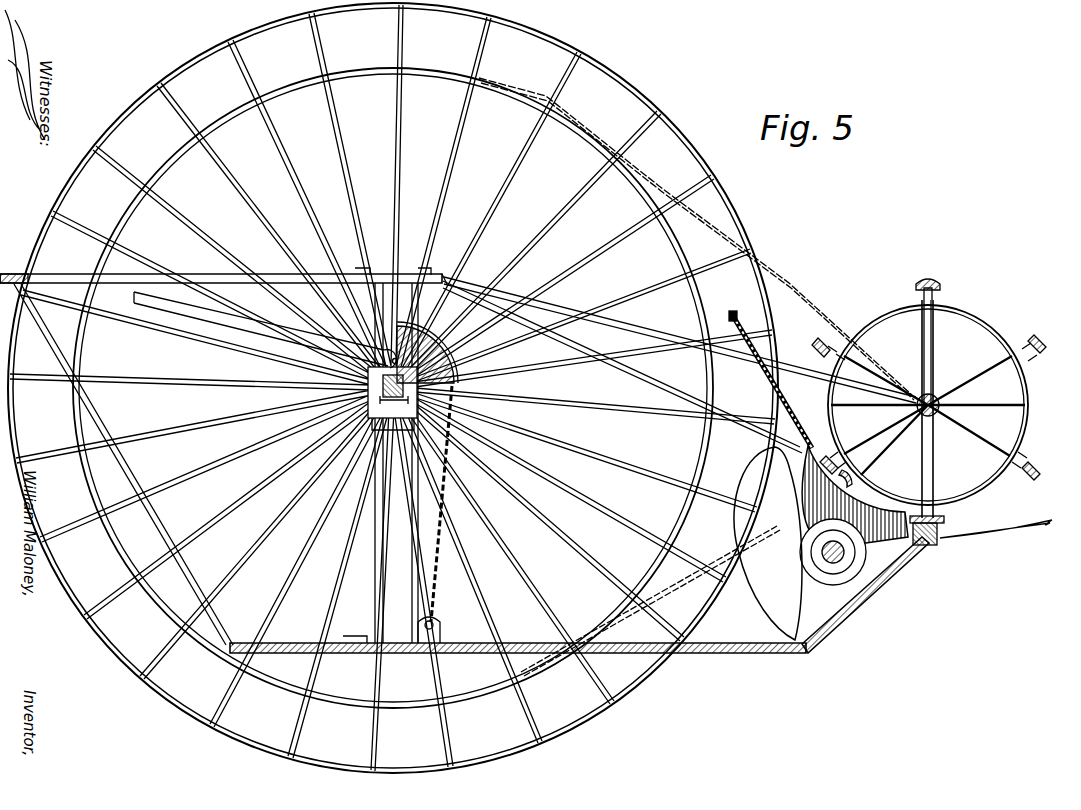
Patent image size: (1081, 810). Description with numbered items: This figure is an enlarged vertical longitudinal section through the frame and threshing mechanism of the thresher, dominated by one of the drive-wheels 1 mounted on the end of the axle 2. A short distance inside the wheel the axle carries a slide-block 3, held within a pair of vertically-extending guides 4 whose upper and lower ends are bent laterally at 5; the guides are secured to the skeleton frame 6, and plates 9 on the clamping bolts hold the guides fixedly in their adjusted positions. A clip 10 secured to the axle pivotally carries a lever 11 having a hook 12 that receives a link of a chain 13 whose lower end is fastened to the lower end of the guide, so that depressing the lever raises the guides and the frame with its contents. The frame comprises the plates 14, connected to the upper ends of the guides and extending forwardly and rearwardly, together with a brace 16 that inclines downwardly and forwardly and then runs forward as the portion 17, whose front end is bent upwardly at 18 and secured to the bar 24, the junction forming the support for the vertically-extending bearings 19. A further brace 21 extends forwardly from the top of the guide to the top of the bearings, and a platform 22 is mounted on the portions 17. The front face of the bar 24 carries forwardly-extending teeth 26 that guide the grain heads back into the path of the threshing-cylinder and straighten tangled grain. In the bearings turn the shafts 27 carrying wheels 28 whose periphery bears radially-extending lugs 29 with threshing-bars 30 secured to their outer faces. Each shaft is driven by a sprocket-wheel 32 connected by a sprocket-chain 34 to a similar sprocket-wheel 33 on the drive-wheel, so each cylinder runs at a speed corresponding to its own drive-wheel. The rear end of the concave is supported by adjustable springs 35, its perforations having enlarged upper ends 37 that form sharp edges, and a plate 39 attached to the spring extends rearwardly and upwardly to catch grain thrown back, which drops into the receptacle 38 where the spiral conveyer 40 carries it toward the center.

The drive-wheels 1 is at (612, 68).
The axle 2 is at (470, 384).
The slide-block 3 is at (360, 440).
The guides 4 is at (374, 522).
The laterally bent ends of the guides 5 is at (356, 268).
The frame 6 is at (190, 553).
The plates 9 is at (366, 388).
The clip 10 is at (340, 402).
The lever 11 is at (288, 302).
The hook 12 is at (430, 334).
The chain 13 is at (452, 452).
The plates 14 is at (192, 272).
The brace 16 is at (120, 425).
The forwardly-extending portion 17 is at (470, 654).
The upwardly bent front end 18 is at (838, 640).
The bearings 19 is at (934, 455).
The brace 21 is at (578, 306).
The platform 22 is at (502, 644).
The bar 24 is at (936, 546).
The teeth 26 is at (988, 538).
The shafts 27 is at (945, 405).
The wheels 28 is at (1030, 432).
The lugs 29 is at (936, 298).
The threshing-bars 30 is at (928, 284).
The sprocket-wheel 32 is at (938, 396).
The sprocket-wheel 33 is at (505, 98).
The sprocket-chain 34 is at (818, 293).
The springs 35 is at (767, 593).
The enlarged upper end of the openings 37 is at (845, 550).
The receptacle 38 is at (800, 540).
The plate 39 is at (766, 392).
The conveyer 40 is at (812, 575).